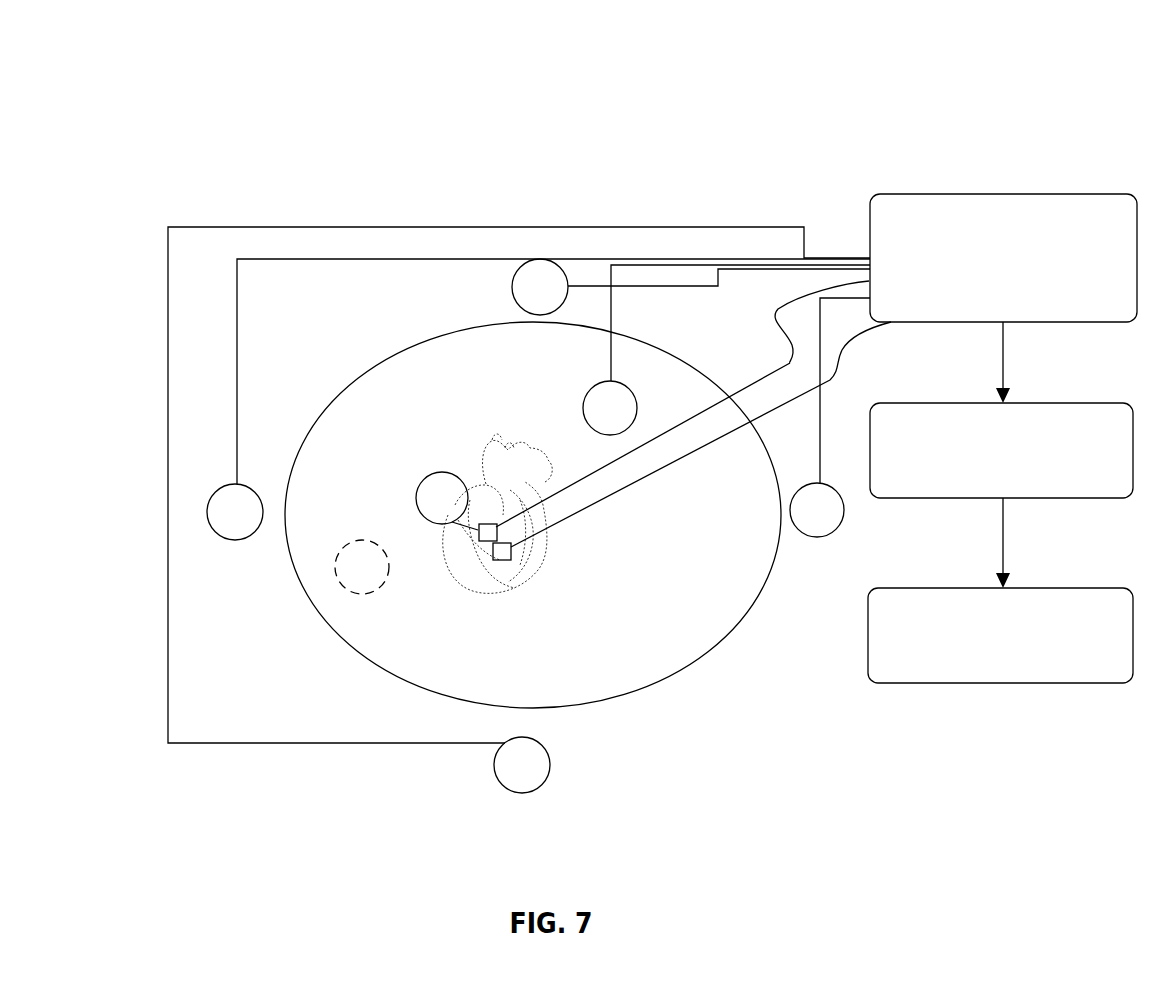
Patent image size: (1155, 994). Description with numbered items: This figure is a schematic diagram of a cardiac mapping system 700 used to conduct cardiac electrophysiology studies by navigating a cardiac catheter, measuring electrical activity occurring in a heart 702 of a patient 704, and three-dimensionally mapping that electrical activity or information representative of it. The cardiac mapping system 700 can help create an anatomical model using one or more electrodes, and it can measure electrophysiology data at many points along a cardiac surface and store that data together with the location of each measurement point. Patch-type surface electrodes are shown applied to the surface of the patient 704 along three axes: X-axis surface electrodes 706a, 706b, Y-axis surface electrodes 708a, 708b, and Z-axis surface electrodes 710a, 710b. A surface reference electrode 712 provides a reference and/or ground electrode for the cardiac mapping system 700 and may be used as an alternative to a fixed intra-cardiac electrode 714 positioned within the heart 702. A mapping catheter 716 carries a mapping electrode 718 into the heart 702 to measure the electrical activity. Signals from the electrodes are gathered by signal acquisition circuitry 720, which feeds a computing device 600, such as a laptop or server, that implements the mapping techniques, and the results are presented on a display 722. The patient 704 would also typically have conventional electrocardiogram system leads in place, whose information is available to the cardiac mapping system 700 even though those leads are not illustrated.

The cardiac mapping system 700 is at (808, 78).
The heart 702 is at (535, 575).
The patient 704 is at (743, 613).
The X-axis surface electrode 706a is at (564, 300).
The X-axis surface electrode 706b is at (546, 778).
The Y-axis surface electrode 708a is at (841, 523).
The Y-axis surface electrode 708b is at (259, 525).
The Z-axis surface electrode 710a is at (634, 421).
The Z-axis surface electrode 710b is at (466, 511).
The surface reference electrode 712 is at (344, 580).
The fixed intra-cardiac electrode 714 is at (480, 537).
The mapping catheter 716 is at (765, 420).
The mapping electrode 718 is at (496, 561).
The signal acquisition circuitry 720 is at (1072, 257).
The computing device 600 is at (985, 467).
The display 722 is at (1058, 620).